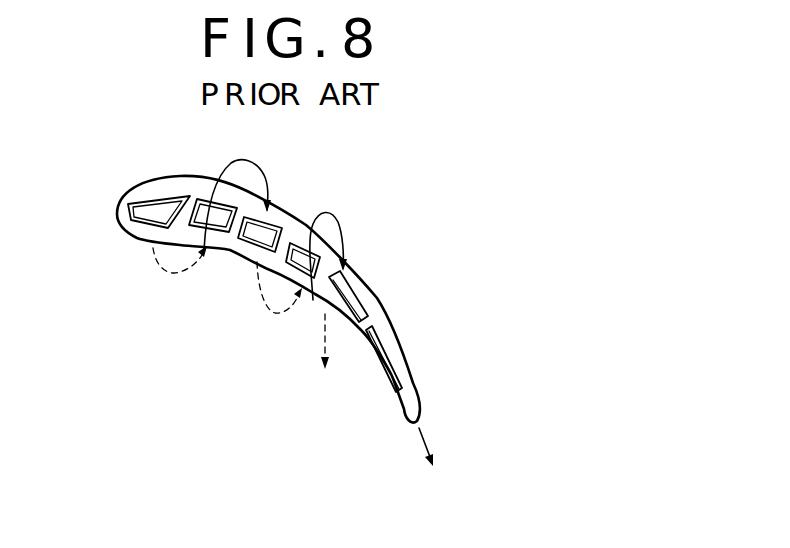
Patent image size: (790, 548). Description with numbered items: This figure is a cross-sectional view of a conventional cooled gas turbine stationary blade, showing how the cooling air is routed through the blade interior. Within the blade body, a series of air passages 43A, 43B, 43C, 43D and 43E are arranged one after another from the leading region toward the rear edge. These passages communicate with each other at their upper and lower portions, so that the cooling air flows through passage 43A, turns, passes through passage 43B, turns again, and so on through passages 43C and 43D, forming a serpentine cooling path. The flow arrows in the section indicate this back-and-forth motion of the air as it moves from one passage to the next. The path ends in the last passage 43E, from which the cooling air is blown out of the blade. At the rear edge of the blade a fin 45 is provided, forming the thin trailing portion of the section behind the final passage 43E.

The air passage 43A is at (152, 240).
The air passage 43B is at (238, 252).
The air passage 43C is at (247, 258).
The air passage 43D is at (313, 292).
The air passage 43E is at (358, 328).
The fin 45 is at (411, 364).